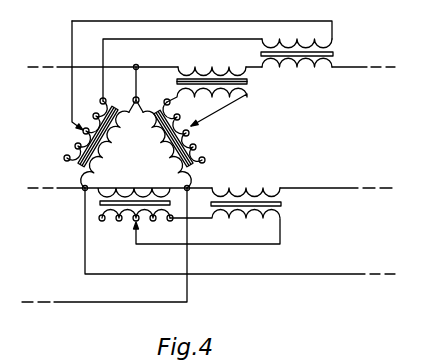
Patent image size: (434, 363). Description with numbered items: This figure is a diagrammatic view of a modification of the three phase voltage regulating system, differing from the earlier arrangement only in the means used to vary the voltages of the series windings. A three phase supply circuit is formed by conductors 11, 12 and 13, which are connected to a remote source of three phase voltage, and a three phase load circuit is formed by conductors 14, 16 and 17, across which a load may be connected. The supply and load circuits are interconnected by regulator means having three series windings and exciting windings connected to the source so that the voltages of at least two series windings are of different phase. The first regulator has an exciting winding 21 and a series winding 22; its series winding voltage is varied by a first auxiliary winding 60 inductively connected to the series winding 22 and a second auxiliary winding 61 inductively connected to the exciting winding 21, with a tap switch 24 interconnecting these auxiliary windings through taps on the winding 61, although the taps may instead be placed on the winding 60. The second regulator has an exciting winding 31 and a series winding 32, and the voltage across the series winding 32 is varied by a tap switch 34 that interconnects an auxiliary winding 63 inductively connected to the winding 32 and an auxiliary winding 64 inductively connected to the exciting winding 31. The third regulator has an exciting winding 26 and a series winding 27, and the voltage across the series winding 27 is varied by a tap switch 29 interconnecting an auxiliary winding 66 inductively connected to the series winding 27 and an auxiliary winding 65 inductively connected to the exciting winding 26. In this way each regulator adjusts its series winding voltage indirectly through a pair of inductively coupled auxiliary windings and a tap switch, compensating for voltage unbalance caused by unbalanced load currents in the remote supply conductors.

The conductor 11 is at (58, 189).
The conductor 12 is at (71, 303).
The conductor 13 is at (62, 66).
The conductor 14 is at (364, 274).
The conductor 16 is at (359, 188).
The conductor 17 is at (355, 67).
The exciting winding 21 is at (136, 178).
The series winding 22 is at (247, 185).
The tap switch 24 is at (136, 232).
The exciting winding 26 is at (136, 154).
The series winding 27 is at (288, 70).
The tap switch 29 is at (85, 122).
The exciting winding 31 is at (183, 174).
The series winding 32 is at (200, 68).
The tap switch 34 is at (190, 133).
The first auxiliary winding 60 is at (282, 210).
The second auxiliary winding 61 is at (133, 225).
The auxiliary winding 63 is at (207, 107).
The auxiliary winding 64 is at (205, 162).
The auxiliary winding 65 is at (72, 151).
The auxiliary winding 66 is at (298, 39).